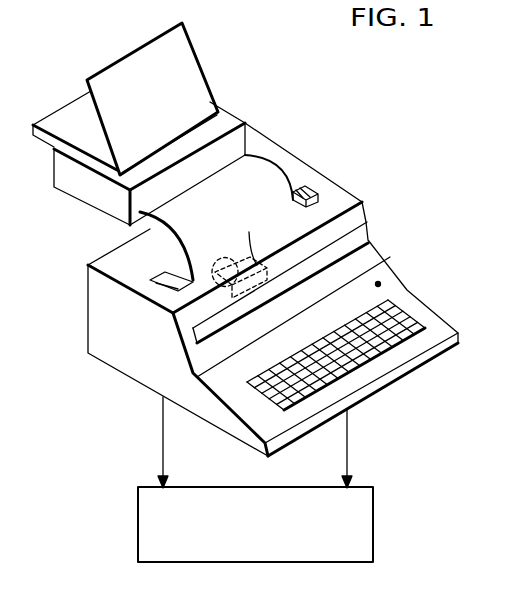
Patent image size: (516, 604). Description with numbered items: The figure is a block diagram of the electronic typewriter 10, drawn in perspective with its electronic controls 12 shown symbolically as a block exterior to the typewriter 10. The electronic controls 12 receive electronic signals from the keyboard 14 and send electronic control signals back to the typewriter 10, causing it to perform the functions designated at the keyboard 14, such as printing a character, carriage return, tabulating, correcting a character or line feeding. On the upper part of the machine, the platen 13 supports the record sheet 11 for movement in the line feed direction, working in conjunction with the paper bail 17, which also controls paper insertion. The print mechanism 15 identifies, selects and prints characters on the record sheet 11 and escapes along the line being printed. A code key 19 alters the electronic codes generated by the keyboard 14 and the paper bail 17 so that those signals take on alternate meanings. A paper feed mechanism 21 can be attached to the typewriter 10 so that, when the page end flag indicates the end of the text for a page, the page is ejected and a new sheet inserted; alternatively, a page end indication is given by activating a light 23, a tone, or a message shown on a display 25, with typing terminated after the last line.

The electronic typewriter 10 is at (377, 255).
The record sheet 11 is at (247, 163).
The electronic controls 12 is at (373, 517).
The platen 13 is at (177, 260).
The keyboard 14 is at (397, 315).
The print mechanism 15 is at (267, 200).
The paper bail 17 is at (294, 172).
The code key 19 is at (250, 428).
The paper feed mechanism 21 is at (245, 120).
The light 23 is at (378, 284).
The display 25 is at (365, 217).